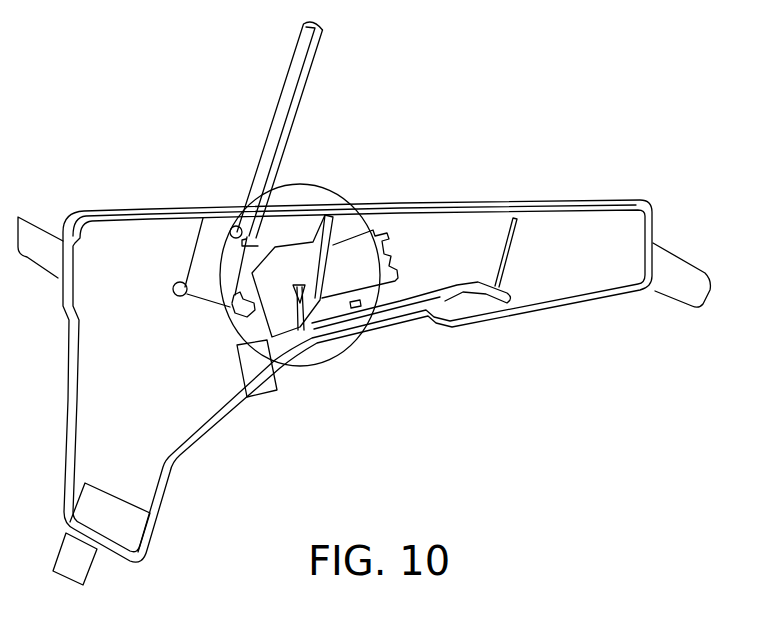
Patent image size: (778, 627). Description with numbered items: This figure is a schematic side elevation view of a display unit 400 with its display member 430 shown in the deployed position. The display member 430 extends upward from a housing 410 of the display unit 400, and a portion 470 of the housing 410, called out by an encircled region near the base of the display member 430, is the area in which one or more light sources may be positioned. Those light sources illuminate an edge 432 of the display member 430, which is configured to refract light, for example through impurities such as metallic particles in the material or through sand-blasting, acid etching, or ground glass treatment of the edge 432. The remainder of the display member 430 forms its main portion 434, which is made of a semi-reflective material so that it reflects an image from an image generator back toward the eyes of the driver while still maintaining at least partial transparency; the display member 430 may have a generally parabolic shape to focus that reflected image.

The display unit 400 is at (378, 299).
The housing 410 is at (654, 228).
The display member 430 is at (309, 125).
The edge 432 is at (296, 114).
The main portion 434 is at (280, 100).
The portion 470 is at (340, 354).